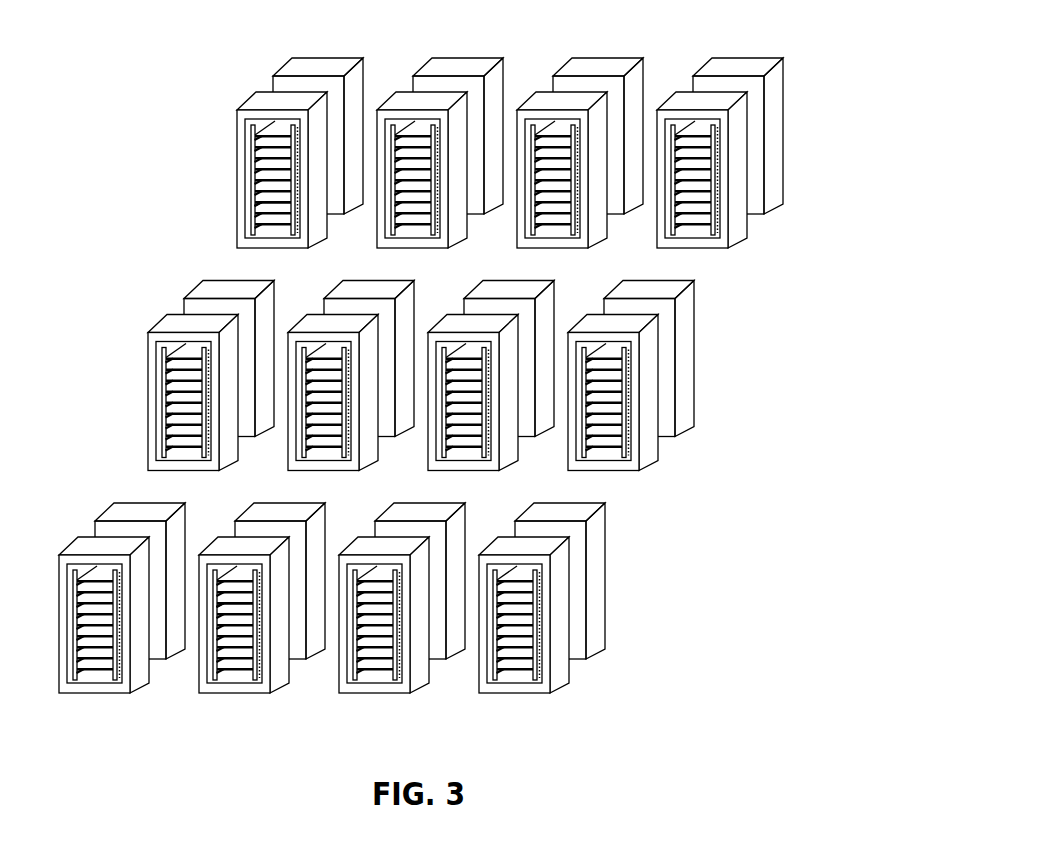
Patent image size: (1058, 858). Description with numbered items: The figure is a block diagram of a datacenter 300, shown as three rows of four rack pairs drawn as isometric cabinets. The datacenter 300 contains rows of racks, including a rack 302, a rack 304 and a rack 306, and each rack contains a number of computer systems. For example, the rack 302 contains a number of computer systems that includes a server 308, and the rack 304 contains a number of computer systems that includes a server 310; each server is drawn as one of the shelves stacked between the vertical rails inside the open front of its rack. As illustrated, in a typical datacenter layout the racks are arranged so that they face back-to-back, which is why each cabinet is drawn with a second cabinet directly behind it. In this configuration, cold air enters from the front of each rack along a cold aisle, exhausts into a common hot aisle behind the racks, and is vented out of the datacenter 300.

The datacenter 300 is at (513, 29).
The rack 302 is at (199, 690).
The rack 304 is at (237, 188).
The rack 306 is at (584, 658).
The server 308 is at (233, 608).
The server 310 is at (271, 202).